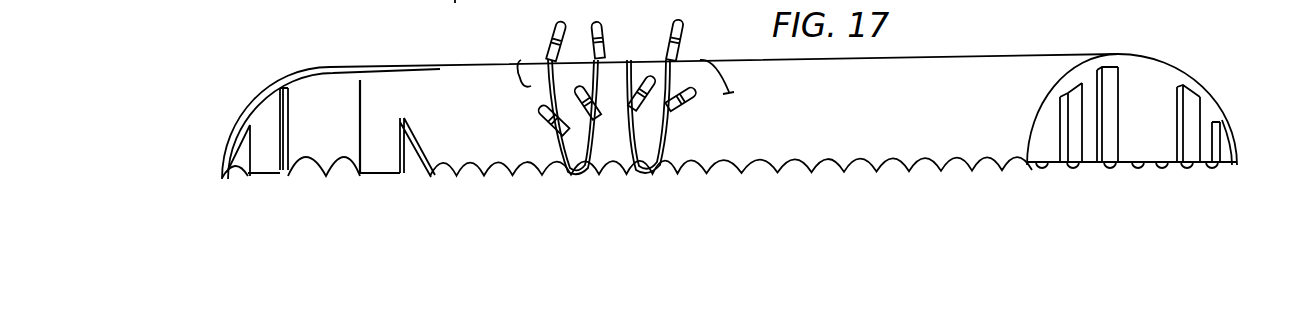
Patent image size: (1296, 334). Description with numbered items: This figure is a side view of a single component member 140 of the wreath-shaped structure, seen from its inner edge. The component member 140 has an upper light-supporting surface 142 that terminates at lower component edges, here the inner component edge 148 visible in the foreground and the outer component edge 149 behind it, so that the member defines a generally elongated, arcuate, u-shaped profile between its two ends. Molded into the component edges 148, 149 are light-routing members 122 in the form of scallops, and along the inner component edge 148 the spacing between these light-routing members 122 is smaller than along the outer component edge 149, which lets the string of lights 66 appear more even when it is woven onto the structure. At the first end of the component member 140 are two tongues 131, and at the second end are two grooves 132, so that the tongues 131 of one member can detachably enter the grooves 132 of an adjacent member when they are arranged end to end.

The string of lights 66 is at (565, 141).
The light-routing members 122 is at (708, 165).
The tongue 131 is at (373, 160).
The groove 132 is at (1090, 148).
The component member 140 is at (1218, 102).
The upper light-supporting surface 142 is at (474, 90).
The inner component edge 148 is at (1002, 177).
The outer component edge 149 is at (451, 0).